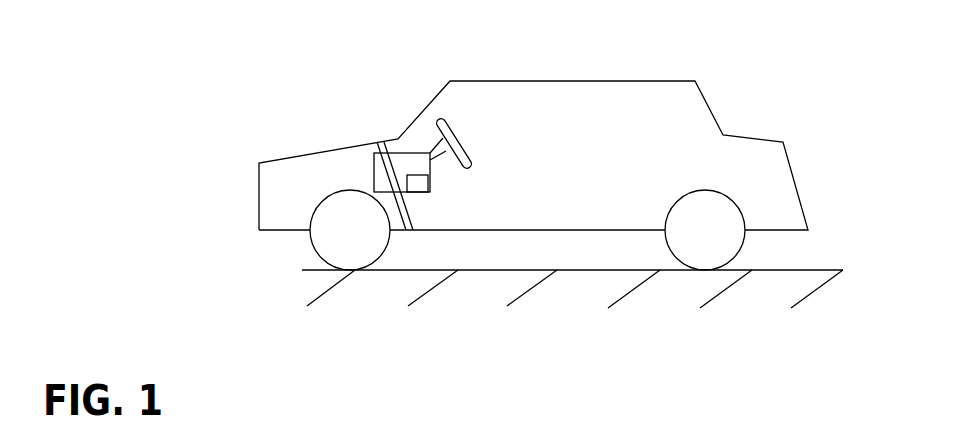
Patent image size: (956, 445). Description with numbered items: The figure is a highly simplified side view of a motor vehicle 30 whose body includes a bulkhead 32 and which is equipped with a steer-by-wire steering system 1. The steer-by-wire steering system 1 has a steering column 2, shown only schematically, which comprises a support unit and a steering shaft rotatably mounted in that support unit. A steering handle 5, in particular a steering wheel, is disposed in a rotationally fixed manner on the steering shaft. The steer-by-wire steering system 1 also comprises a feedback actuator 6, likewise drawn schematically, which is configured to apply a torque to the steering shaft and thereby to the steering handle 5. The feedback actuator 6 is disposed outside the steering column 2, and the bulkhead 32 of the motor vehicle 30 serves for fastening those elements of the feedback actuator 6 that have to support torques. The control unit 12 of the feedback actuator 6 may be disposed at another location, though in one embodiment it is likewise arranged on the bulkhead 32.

The steer-by-wire steering system 1 is at (393, 122).
The motor vehicle 30 is at (621, 56).
The feedback actuator 6 is at (373, 170).
The control unit 12 is at (428, 192).
The steering column 2 is at (447, 173).
The steering handle 5 is at (465, 154).
The bulkhead 32 is at (407, 208).